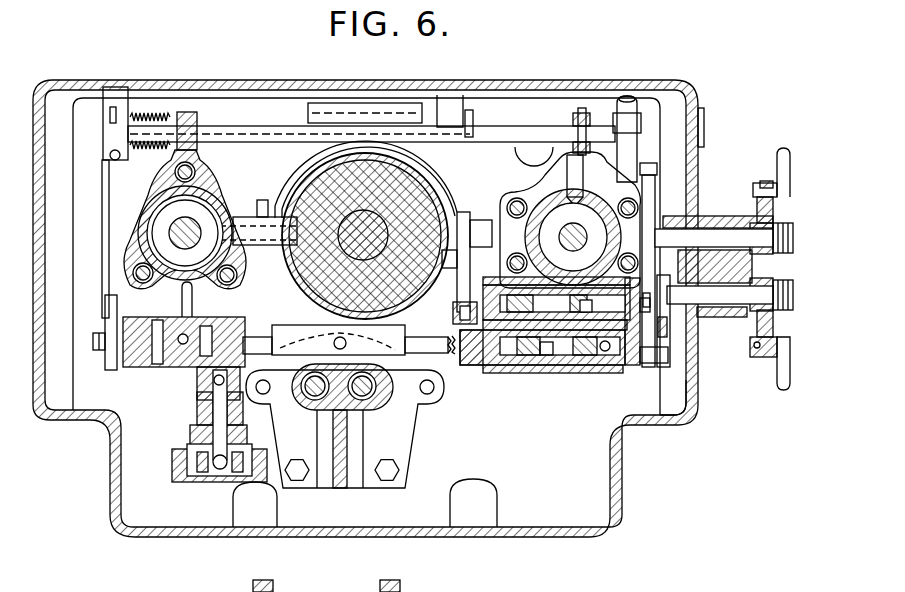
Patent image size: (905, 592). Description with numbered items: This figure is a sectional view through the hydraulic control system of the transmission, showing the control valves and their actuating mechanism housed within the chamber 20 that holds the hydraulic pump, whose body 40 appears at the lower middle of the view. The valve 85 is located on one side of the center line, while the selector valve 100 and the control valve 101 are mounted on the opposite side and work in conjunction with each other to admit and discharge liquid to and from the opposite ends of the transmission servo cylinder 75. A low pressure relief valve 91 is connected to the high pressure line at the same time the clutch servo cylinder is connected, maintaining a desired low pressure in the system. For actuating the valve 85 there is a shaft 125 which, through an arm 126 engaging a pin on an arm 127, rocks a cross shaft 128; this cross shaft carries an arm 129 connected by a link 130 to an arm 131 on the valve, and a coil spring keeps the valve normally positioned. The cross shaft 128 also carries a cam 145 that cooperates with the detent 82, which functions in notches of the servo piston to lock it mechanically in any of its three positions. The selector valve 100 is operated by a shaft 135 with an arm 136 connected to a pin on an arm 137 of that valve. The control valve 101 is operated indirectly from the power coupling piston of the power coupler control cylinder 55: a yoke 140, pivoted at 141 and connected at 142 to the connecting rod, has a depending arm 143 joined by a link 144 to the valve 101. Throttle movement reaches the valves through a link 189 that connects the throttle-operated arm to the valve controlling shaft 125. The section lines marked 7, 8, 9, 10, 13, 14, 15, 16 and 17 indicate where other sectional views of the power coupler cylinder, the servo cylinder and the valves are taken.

The chamber for the hydraulic pump 20 is at (242, 108).
The arm 129 is at (117, 93).
The link 130 is at (105, 232).
The cross shaft 128 is at (540, 136).
The arm on the valve 131 is at (170, 113).
The yoke pivot 141 is at (395, 110).
The yoke 140 is at (280, 172).
The yoke connection to connecting rod 142 is at (214, 198).
The power coupler control cylinder 55 is at (143, 199).
The low pressure relief valve 91 is at (183, 446).
The valve 85 is at (258, 329).
The pump body 40 is at (388, 434).
The depending arm 143 is at (457, 262).
The link 144 is at (455, 320).
The selector valve 100 is at (503, 386).
The control valve 101 is at (523, 303).
The transmission servo cylinder 75 is at (557, 197).
The detent 82 is at (550, 167).
The cam 145 is at (600, 89).
The arm 127 is at (652, 163).
The arm 126 is at (656, 185).
The shaft 125 is at (693, 238).
The shaft 135 is at (706, 300).
The arm on the selector valve 137 is at (640, 363).
The arm 136 is at (695, 388).
The link 189 is at (785, 158).
The section line 7 is at (211, 306).
The section line 8 is at (205, 35).
The section line 9 is at (606, 306).
The section line 10 is at (577, 112).
The section line 13 is at (205, 302).
The section line 14 is at (157, 302).
The section line 15 is at (553, 244).
The section line 16 is at (602, 244).
The section line 17 is at (545, 229).